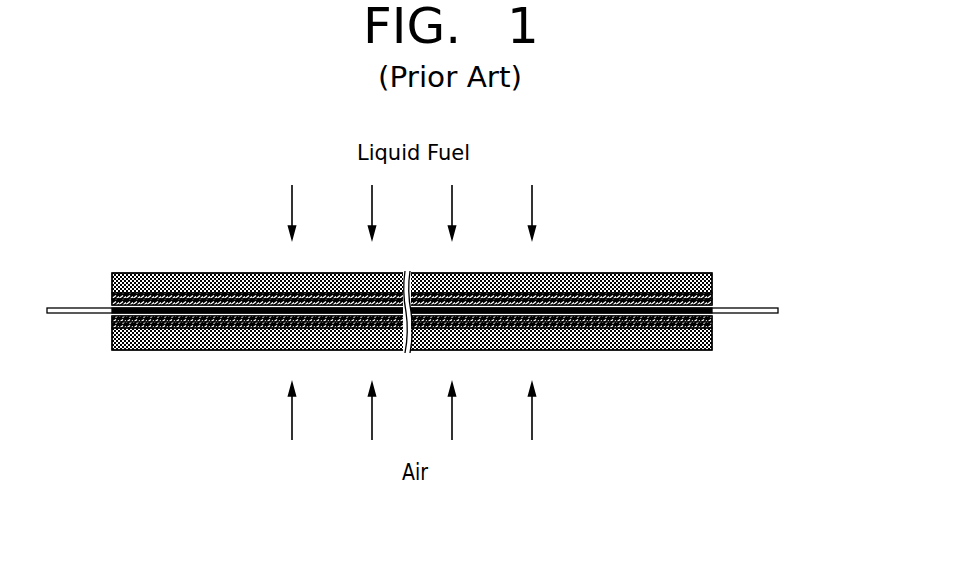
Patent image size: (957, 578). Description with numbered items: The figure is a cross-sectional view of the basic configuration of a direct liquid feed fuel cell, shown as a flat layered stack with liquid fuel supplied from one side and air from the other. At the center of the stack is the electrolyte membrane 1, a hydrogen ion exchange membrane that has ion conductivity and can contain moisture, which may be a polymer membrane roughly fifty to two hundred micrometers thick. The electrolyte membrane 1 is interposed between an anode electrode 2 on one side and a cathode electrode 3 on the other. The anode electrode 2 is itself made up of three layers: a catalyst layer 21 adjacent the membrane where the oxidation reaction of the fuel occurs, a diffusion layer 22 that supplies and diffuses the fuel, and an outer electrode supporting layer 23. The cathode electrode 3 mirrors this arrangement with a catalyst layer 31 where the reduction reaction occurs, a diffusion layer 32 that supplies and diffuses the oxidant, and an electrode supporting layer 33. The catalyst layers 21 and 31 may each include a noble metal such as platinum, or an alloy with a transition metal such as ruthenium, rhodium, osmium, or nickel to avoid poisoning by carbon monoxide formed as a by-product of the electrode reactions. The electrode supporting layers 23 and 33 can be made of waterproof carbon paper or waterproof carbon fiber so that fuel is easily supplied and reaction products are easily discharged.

The electrolyte membrane 1 is at (778, 311).
The anode electrode 2 is at (778, 248).
The catalyst layer 21 is at (712, 301).
The diffusion layer 22 is at (712, 289).
The electrode supporting layer 23 is at (712, 278).
The cathode electrode 3 is at (778, 327).
The catalyst layer 31 is at (712, 319).
The diffusion layer 32 is at (712, 328).
The electrode supporting layer 33 is at (712, 346).